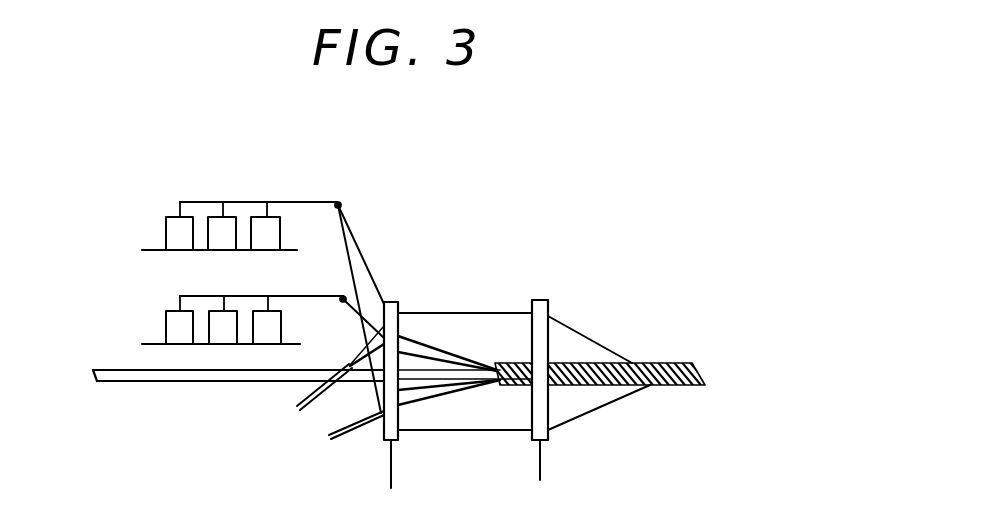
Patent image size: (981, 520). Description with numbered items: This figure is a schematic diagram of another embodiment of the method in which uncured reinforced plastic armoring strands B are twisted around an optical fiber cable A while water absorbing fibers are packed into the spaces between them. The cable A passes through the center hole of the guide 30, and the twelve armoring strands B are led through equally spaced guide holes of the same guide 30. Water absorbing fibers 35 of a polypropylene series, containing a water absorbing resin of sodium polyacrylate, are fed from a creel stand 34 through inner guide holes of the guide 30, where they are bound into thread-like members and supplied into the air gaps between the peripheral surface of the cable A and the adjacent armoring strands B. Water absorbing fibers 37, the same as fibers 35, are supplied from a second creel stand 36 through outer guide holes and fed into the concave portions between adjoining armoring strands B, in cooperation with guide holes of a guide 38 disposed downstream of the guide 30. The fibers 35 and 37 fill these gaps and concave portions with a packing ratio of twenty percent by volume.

The guide 30 is at (391, 301).
The creel stand 34 is at (163, 326).
The water absorbing fibers 35 is at (312, 296).
The creel stand 36 is at (163, 229).
The water absorbing fibers 37 is at (308, 201).
The guide 38 is at (541, 299).
The optical fiber cable A is at (120, 382).
The armoring strands B is at (310, 407).